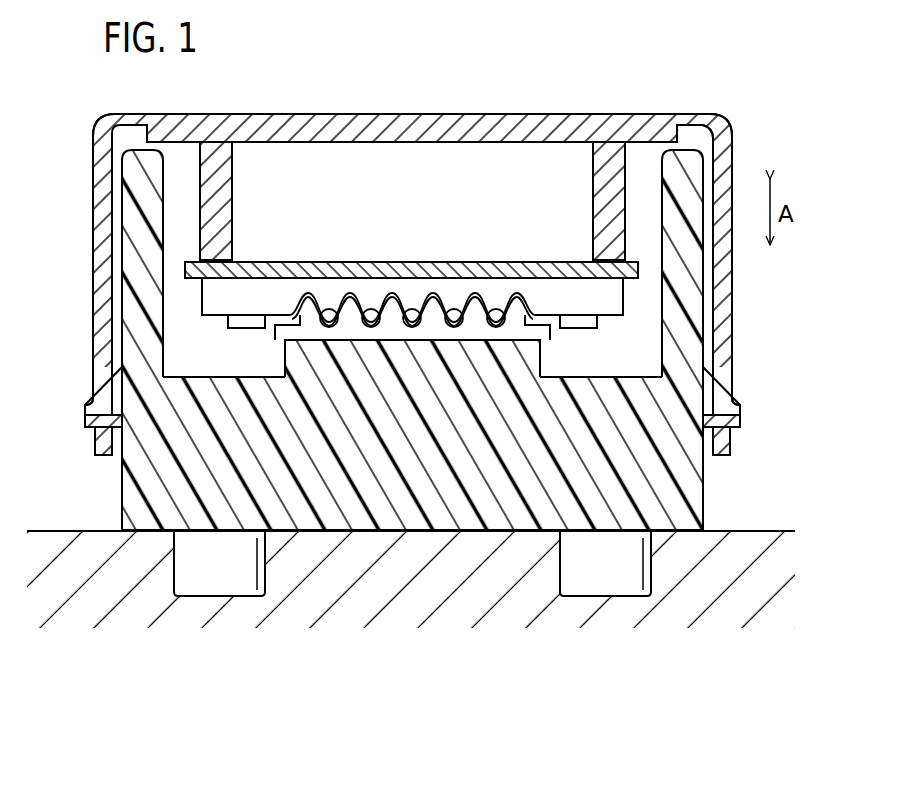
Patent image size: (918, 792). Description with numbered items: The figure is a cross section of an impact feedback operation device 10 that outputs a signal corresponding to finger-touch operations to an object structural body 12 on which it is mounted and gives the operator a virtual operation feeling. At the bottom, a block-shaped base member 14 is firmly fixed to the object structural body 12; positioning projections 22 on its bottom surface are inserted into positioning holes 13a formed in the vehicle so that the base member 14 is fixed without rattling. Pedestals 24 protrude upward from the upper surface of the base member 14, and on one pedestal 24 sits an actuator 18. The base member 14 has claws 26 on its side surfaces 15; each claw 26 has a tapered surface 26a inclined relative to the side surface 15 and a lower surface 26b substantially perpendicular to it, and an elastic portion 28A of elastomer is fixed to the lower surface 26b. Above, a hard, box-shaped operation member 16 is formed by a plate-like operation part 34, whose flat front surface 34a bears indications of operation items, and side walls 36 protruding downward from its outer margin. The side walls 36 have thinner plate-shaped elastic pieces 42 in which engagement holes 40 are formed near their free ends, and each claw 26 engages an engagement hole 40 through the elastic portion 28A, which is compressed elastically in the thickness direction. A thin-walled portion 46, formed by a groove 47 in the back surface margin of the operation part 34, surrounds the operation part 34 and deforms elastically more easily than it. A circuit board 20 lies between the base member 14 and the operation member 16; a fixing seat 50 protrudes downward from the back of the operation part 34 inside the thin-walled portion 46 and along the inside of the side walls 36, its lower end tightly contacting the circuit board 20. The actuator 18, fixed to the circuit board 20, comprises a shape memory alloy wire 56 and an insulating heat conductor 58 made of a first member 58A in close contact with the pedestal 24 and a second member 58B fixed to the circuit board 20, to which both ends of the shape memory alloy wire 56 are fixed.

The impact feedback operation device 10 is at (469, 99).
The object structural body 12 is at (731, 527).
The positioning holes 13a is at (233, 584).
The base member 14 is at (118, 503).
The side surfaces 15 is at (118, 485).
The operation member 16 is at (91, 156).
The actuator 18 is at (612, 322).
The circuit board 20 is at (413, 259).
The positioning projections 22 is at (205, 582).
The pedestals 24 is at (505, 312).
The claws 26 is at (86, 407).
The tapered surface 26a is at (103, 392).
The lower surface 26b is at (106, 440).
The elastic portion 28A is at (98, 428).
The operation part 34 is at (354, 116).
The front surface 34a is at (576, 117).
The side walls 36 is at (130, 297).
The engagement hole 40 is at (108, 359).
The elastic pieces 42 is at (100, 243).
The thin-walled portion 46 is at (691, 118).
The groove 47 is at (700, 133).
The fixing seat 50 is at (210, 202).
The shape memory alloy wire 56 is at (352, 292).
The insulating heat conductor 58 is at (540, 290).
The first member 58A is at (279, 339).
The second member 58B is at (218, 300).